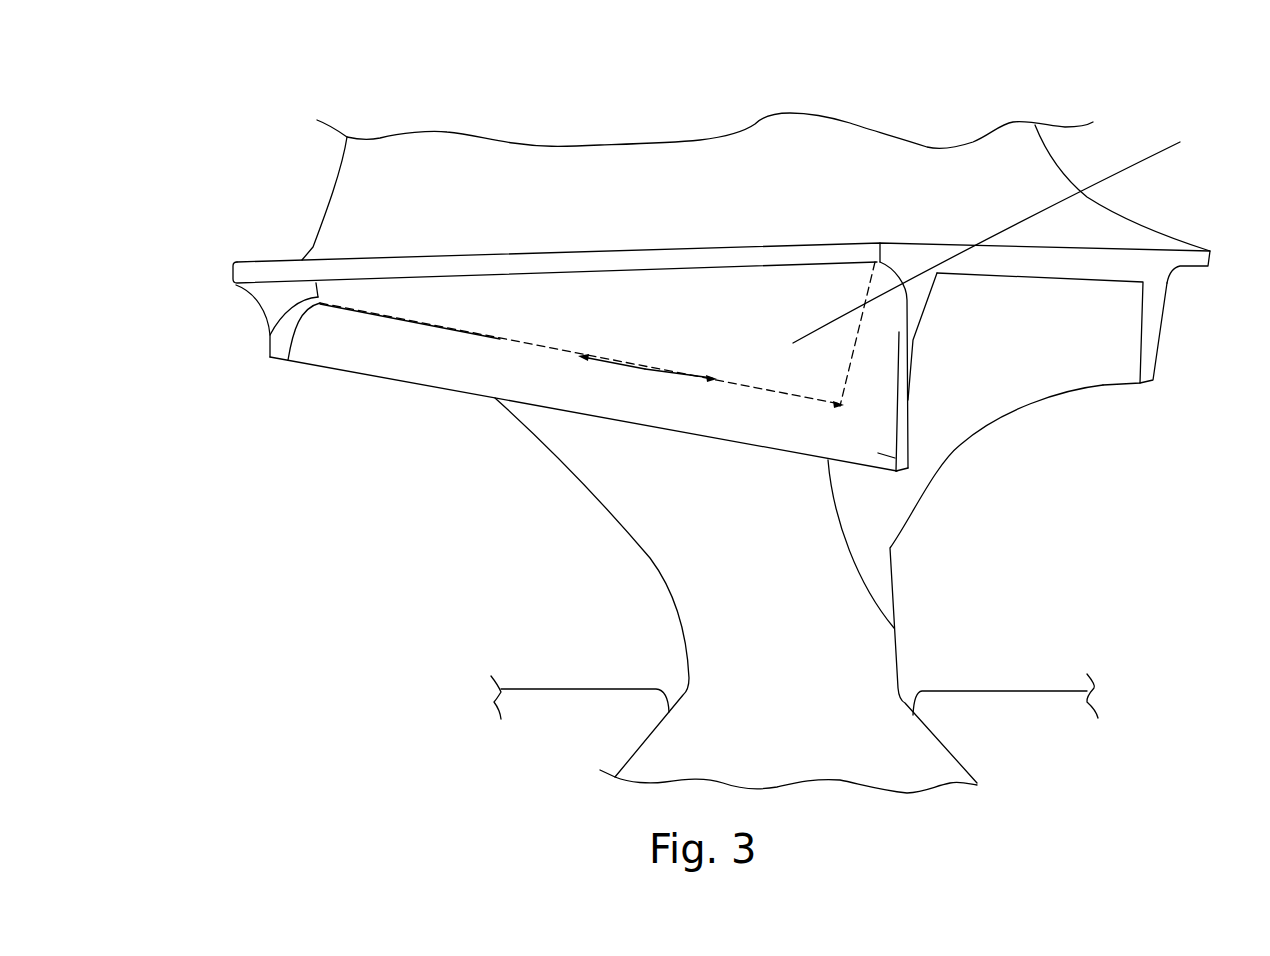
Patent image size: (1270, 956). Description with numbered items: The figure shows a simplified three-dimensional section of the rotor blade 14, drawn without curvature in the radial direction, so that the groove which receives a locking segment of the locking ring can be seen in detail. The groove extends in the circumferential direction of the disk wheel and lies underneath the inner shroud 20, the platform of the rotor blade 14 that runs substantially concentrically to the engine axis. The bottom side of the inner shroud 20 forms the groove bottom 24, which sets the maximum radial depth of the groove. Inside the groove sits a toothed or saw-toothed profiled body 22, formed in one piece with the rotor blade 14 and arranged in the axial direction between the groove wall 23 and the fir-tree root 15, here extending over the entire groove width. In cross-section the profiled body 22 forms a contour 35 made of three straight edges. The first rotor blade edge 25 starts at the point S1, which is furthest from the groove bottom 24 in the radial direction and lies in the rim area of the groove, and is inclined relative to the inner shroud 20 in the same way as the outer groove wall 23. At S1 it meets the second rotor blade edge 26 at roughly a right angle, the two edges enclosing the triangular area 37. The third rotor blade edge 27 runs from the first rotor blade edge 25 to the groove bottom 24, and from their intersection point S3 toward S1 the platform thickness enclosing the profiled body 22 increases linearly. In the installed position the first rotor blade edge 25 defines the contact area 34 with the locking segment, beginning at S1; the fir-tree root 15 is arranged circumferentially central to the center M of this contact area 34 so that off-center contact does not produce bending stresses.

The rotor blade 14 is at (275, 137).
The inner shroud 20 is at (263, 273).
The triangular area 37 is at (1004, 233).
The third rotor blade edge 27 is at (272, 325).
The intersection point S3 is at (288, 358).
The contour 35 is at (357, 318).
The profiled body 22 is at (458, 310).
The first rotor blade edge 25 is at (502, 337).
The contact area 34 is at (645, 372).
The center of the contact area M is at (713, 380).
The intersection point S1 is at (900, 425).
The groove wall 23 is at (845, 403).
The second rotor blade edge 26 is at (867, 310).
The groove bottom 24 is at (1042, 280).
The fir-tree root 15 is at (832, 626).